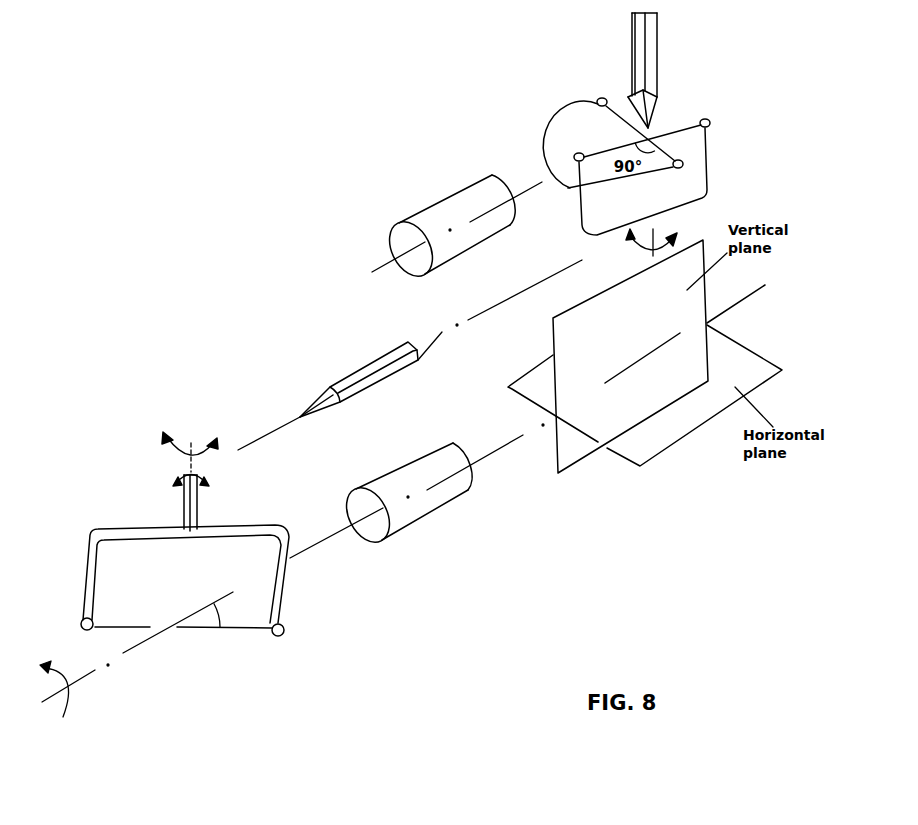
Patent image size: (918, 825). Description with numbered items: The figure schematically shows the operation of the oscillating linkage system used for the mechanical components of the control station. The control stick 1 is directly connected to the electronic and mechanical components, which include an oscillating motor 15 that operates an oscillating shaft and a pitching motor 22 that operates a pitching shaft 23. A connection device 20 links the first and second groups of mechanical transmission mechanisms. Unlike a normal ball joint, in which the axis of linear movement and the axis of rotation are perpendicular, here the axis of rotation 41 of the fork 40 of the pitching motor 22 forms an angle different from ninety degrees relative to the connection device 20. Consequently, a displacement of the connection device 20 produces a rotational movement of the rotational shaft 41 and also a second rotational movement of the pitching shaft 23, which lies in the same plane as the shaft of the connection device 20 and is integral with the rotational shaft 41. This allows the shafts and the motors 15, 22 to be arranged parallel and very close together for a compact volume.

The control stick 1 is at (632, 40).
The oscillating motor 15 is at (468, 208).
The connection device 20 is at (365, 372).
The pitching motor 22 is at (412, 508).
The pitching shaft 23 is at (332, 538).
The fork 40 is at (127, 530).
The axis of rotation 41 is at (252, 630).